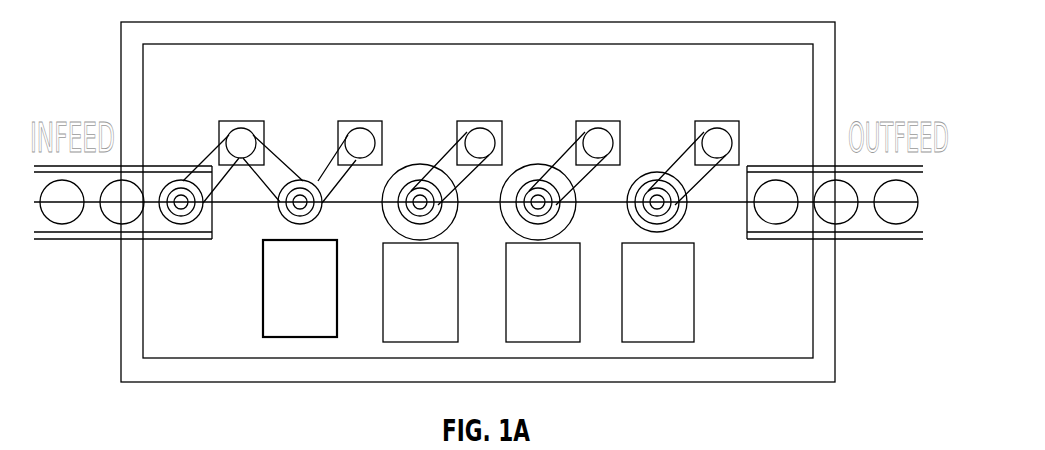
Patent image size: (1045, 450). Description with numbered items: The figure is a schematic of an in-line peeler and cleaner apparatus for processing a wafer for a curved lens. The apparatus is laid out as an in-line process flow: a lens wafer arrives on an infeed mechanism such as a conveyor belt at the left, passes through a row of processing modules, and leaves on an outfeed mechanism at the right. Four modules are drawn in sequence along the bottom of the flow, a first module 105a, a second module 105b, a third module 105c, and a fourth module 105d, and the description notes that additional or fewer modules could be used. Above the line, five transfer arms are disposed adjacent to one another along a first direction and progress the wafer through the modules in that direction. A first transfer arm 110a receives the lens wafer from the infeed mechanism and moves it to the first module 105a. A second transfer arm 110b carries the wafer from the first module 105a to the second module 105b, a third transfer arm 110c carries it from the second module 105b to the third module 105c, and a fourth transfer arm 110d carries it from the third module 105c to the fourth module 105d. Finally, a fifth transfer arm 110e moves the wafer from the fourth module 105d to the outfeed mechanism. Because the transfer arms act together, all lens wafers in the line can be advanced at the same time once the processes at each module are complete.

The first module 105a is at (325, 337).
The second module 105b is at (442, 342).
The third module 105c is at (572, 342).
The fourth module 105d is at (688, 342).
The first transfer arm 110a is at (233, 121).
The second transfer arm 110b is at (352, 121).
The third transfer arm 110c is at (471, 121).
The fourth transfer arm 110d is at (590, 121).
The fifth transfer arm 110e is at (709, 121).